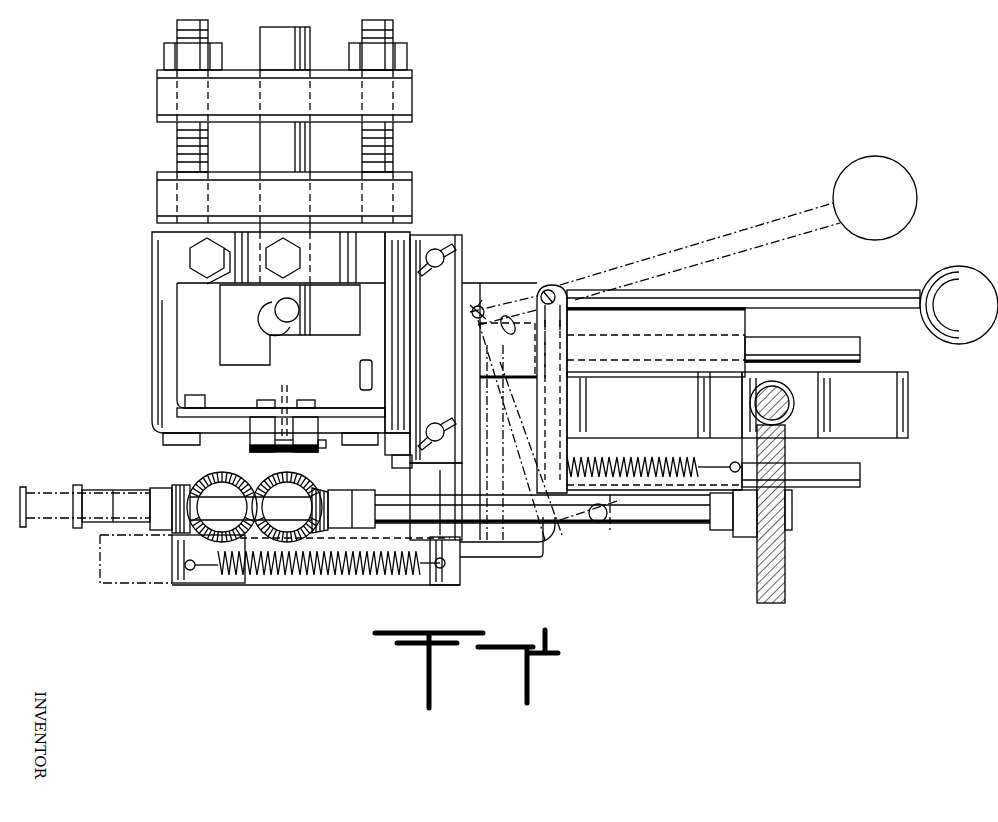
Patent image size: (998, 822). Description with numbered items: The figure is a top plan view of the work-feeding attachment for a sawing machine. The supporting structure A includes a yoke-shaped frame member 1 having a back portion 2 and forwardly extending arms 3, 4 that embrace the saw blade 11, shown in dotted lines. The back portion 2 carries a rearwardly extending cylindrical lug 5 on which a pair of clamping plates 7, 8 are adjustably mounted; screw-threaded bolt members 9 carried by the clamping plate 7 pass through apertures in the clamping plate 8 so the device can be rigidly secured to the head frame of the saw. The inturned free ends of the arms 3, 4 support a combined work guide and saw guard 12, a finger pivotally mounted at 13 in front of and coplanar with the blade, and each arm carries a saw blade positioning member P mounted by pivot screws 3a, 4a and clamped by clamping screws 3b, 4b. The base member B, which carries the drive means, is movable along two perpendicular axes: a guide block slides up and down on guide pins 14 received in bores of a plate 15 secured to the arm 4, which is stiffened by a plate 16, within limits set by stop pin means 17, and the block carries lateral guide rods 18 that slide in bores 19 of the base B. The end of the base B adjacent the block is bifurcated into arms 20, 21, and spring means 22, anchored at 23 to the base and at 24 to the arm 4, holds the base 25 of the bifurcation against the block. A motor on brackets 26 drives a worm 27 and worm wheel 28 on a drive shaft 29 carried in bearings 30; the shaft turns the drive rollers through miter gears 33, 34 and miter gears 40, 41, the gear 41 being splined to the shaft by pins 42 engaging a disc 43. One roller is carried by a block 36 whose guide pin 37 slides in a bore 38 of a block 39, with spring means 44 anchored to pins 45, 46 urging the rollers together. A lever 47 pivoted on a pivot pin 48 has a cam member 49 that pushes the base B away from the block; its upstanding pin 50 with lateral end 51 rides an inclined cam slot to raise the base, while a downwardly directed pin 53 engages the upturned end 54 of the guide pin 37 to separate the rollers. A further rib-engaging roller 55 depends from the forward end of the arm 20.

The yoke-shaped frame member 1 is at (148, 317).
The back portion 2 is at (222, 282).
The arm 3 is at (160, 358).
The pivot screw 3a is at (272, 389).
The clamping screw 3b is at (190, 395).
The arm 4 is at (391, 323).
The pivot screw 4a is at (310, 400).
The clamping screw 4b is at (345, 448).
The lug 5 is at (268, 146).
The clamping plate 7 is at (408, 188).
The clamping plate 8 is at (408, 100).
The bolt members 9 is at (186, 143).
The saw blade 11 is at (290, 392).
The combined work guide and saw guard 12 is at (284, 452).
The pivot mounting 13 is at (326, 444).
The guide pins 14 is at (444, 259).
The plate 15 is at (445, 357).
The stiffening plate 16 is at (370, 346).
The stop pin means 17 is at (442, 268).
The guide rods 18 is at (858, 344).
The bores 19 is at (718, 337).
The arm 20 is at (337, 326).
The arm 21 is at (386, 495).
The spring means 22 is at (632, 458).
The spring anchor on base 23 is at (732, 464).
The spring anchor on arm 24 is at (400, 466).
The base of the bifurcation 25 is at (462, 472).
The brackets 26 is at (647, 408).
The worm 27 is at (792, 399).
The worm wheel 28 is at (785, 576).
The drive shaft 29 is at (640, 528).
The bearings 30 is at (350, 490).
The miter gear 33 is at (300, 456).
The miter gear 34 is at (325, 479).
The block 36 is at (218, 576).
The guide pin 37 is at (553, 558).
The bore 38 is at (392, 578).
The block 39 is at (430, 582).
The miter gear 40 is at (222, 472).
The miter gear 41 is at (180, 485).
The longitudinal pins 42 is at (90, 490).
The disc 43 is at (77, 485).
The spring means 44 is at (355, 582).
The pin 45 is at (180, 580).
The pin 46 is at (447, 565).
The lever 47 is at (735, 238).
The pivot pin 48 is at (598, 523).
The cam member 49 is at (488, 308).
The upstanding pin 50 is at (470, 313).
The laterally directed end portion 51 is at (541, 292).
The downwardly directed pin 53 is at (512, 347).
The upturned end 54 is at (565, 369).
The rib-engaging roller 55 is at (287, 322).
The supporting structure A is at (438, 229).
The base member B is at (752, 289).
The saw blade positioning member P is at (255, 400).